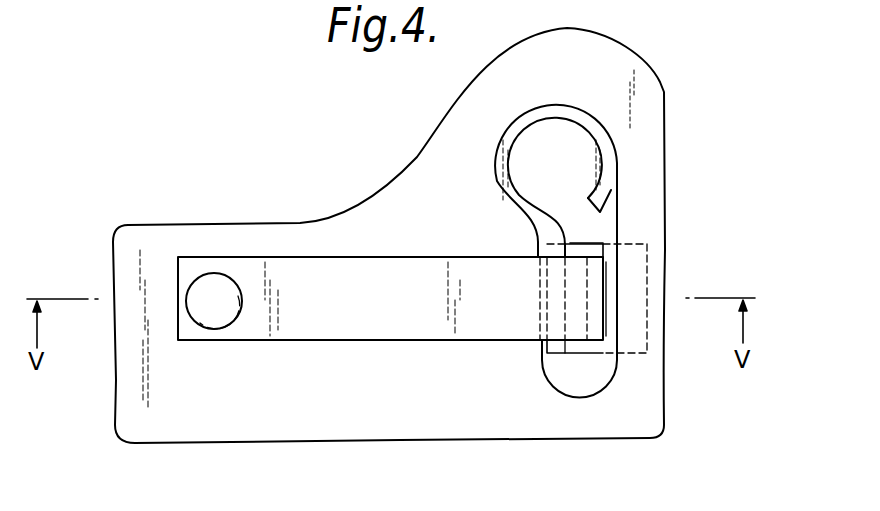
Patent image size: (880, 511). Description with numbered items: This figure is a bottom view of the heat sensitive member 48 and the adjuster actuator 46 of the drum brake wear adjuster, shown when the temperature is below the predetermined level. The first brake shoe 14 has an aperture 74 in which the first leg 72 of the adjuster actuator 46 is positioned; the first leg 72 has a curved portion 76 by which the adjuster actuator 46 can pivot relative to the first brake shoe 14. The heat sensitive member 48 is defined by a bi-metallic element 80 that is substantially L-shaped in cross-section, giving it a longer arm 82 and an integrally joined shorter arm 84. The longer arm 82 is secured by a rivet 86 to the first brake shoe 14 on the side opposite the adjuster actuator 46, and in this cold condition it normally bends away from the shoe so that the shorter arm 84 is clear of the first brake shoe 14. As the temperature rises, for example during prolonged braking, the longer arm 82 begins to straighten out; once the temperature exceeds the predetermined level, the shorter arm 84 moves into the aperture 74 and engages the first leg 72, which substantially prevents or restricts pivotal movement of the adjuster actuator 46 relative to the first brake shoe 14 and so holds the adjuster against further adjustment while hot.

The first brake shoe 14 is at (430, 180).
The adjuster actuator 46 is at (584, 243).
The heat sensitive member 48 is at (370, 252).
The first leg 72 is at (557, 357).
The aperture 74 is at (619, 213).
The curved portion 76 is at (584, 123).
The bi-metallic element 80 is at (294, 257).
The longer arm 82 is at (308, 327).
The shorter arm 84 is at (602, 327).
The rivet 86 is at (210, 284).